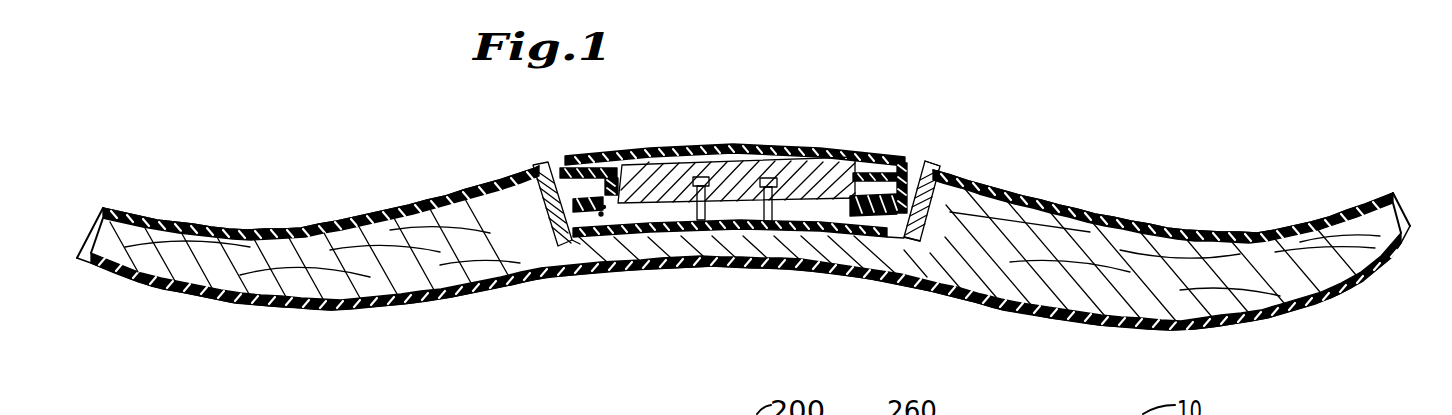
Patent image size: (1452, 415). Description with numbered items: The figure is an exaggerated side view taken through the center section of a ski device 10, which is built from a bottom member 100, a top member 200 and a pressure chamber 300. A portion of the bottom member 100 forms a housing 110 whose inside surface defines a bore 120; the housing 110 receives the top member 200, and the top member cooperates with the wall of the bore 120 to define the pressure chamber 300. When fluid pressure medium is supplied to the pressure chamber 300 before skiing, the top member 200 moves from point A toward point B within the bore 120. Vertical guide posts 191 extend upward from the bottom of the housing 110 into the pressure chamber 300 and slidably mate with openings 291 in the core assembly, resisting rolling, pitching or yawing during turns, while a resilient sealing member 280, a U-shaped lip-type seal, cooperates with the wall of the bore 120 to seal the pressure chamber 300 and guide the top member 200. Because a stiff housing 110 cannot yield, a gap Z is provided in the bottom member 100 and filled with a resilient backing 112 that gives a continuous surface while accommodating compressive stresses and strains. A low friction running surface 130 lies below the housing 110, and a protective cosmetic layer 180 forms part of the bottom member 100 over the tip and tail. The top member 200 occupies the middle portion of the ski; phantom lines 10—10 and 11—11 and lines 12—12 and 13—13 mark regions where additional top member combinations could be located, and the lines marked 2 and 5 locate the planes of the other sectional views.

The ski device 10 is at (1158, 111).
The phantom line 11— 11 is at (418, 340).
The phantom line 12— 12 is at (1063, 342).
The line 13— 13 is at (1285, 342).
The section line 5 is at (612, 342).
The section line 2 is at (765, 342).
The bottom member 100 is at (1043, 160).
The housing 110 is at (918, 233).
The resilient backing 112 is at (931, 163).
The bore 120 is at (897, 243).
The low friction running surface 130 is at (1106, 324).
The protective cosmetic layer 180 is at (1154, 224).
The vertical guide posts 191 is at (790, 172).
The top member 200 is at (730, 143).
The resilient sealing member 280 is at (606, 184).
The openings 291 is at (777, 180).
The pressure chamber 300 is at (794, 218).
The gap Z is at (944, 189).
The point A is at (601, 214).
The point B is at (604, 207).